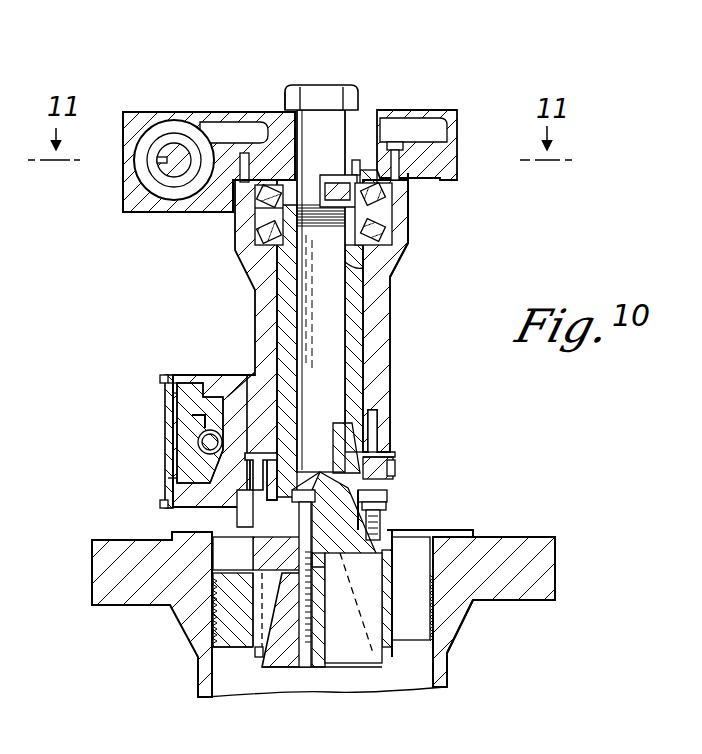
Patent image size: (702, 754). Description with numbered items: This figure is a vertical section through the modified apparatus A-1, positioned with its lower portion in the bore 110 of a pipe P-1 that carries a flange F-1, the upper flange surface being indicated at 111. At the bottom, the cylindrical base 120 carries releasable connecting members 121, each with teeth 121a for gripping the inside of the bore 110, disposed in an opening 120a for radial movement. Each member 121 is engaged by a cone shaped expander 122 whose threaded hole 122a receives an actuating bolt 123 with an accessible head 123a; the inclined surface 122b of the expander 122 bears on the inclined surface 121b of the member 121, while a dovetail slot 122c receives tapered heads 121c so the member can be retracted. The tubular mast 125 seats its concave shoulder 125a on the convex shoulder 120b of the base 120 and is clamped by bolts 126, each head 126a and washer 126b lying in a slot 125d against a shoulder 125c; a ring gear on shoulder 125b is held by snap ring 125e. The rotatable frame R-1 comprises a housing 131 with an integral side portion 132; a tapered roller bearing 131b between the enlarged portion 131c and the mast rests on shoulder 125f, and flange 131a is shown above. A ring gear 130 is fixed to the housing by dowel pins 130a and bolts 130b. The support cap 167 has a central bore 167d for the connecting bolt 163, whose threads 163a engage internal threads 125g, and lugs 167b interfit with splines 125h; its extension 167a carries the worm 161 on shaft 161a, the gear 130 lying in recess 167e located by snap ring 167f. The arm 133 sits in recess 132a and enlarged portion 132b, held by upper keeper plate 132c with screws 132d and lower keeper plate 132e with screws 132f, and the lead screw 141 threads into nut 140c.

The bore 110 is at (415, 687).
The flange 111 is at (537, 537).
The base 120 is at (387, 530).
The opening 120a is at (215, 580).
The convex annular shoulder 120b is at (287, 517).
The releasable connecting member 121 is at (233, 623).
The teeth 121a is at (455, 625).
The inclined surface 121b is at (235, 600).
The tapered heads 121c is at (275, 613).
The cone shaped expander 122 is at (283, 657).
The threaded hole 122a is at (310, 608).
The inclined surface 122b is at (285, 580).
The dovetail slot 122c is at (253, 670).
The actuating bolt 123 is at (297, 548).
The bolt head 123a is at (338, 450).
The tubular column support or mast 125 is at (353, 332).
The concave annular shoulder 125a is at (213, 543).
The annular shoulder 125b is at (393, 467).
The ring gear 125c is at (395, 452).
The slot 125d is at (232, 380).
The snap ring 125e is at (321, 291).
The annular shoulder 125f is at (365, 268).
The internal threads 125g is at (262, 211).
The splines or lugs 125h is at (358, 160).
The clamping bolt 126 is at (387, 520).
The bolt head 126a is at (387, 493).
The washer 126b is at (387, 507).
The ring gear 130 is at (440, 150).
The dowel pins 130a is at (243, 153).
The holding bolts 130b is at (395, 146).
The cylindrical frame member or housing 131 is at (260, 298).
The housing flange 131a is at (390, 423).
The upper bearing 131b is at (378, 217).
The upper enlarged portion 131c is at (252, 232).
The laterally extending side portion 132 is at (197, 377).
The recess or way 132a is at (180, 410).
The enlarged recess portion 132b is at (172, 393).
The upper keeper plate 132c is at (163, 376).
The bolts or screws 132d is at (160, 378).
The lower keeper plate 132e is at (167, 475).
The bolts or screws 132f is at (162, 498).
The extending arm 133 is at (193, 423).
The threaded nut 140c is at (197, 430).
The lead screw 141 is at (198, 442).
The worm 161 is at (167, 128).
The shaft 161a is at (178, 146).
The connecting bolt 163 is at (320, 85).
The threads 163a is at (322, 228).
The support cap 167 is at (232, 113).
The extension or side portion 167a is at (135, 112).
The splines or lugs 167b is at (333, 183).
The central bore 167d is at (290, 84).
The recess 167e is at (282, 140).
The snap ring 167f is at (352, 168).
The apparatus A-1 is at (418, 247).
The rotatable frame R-1 is at (382, 305).
The flange F-1 is at (557, 572).
The pipe P-1 is at (447, 672).